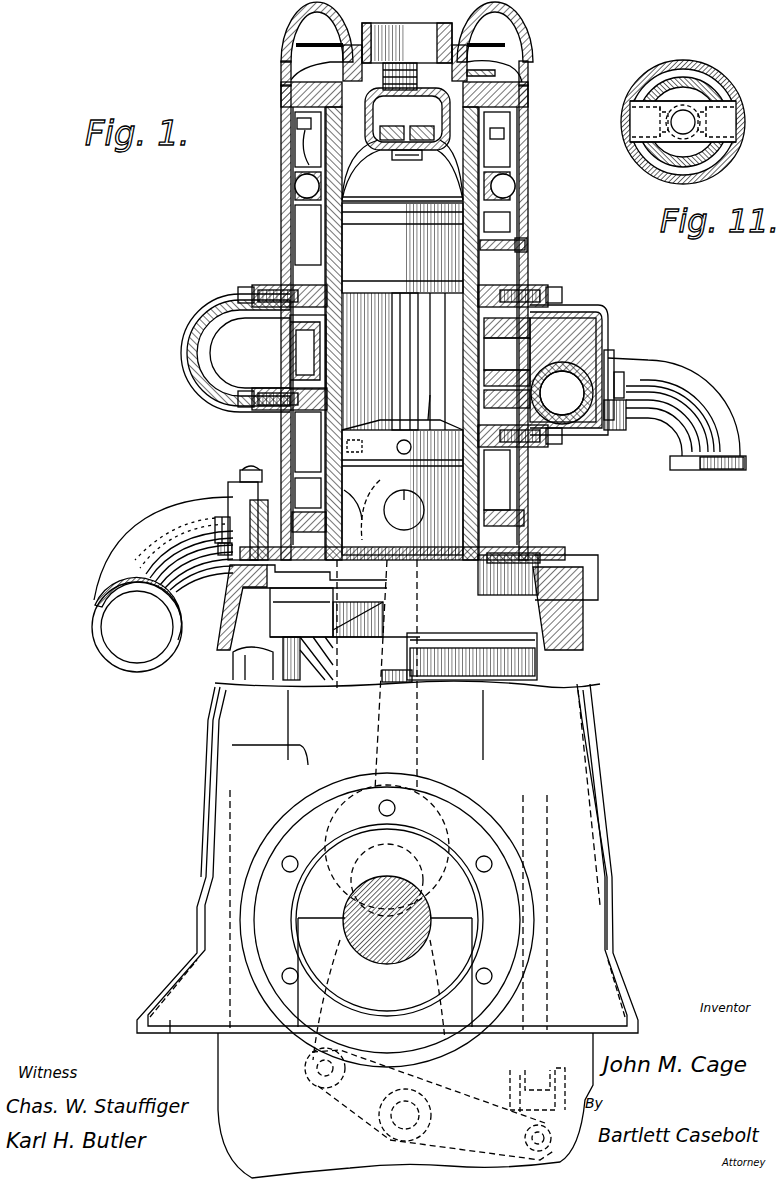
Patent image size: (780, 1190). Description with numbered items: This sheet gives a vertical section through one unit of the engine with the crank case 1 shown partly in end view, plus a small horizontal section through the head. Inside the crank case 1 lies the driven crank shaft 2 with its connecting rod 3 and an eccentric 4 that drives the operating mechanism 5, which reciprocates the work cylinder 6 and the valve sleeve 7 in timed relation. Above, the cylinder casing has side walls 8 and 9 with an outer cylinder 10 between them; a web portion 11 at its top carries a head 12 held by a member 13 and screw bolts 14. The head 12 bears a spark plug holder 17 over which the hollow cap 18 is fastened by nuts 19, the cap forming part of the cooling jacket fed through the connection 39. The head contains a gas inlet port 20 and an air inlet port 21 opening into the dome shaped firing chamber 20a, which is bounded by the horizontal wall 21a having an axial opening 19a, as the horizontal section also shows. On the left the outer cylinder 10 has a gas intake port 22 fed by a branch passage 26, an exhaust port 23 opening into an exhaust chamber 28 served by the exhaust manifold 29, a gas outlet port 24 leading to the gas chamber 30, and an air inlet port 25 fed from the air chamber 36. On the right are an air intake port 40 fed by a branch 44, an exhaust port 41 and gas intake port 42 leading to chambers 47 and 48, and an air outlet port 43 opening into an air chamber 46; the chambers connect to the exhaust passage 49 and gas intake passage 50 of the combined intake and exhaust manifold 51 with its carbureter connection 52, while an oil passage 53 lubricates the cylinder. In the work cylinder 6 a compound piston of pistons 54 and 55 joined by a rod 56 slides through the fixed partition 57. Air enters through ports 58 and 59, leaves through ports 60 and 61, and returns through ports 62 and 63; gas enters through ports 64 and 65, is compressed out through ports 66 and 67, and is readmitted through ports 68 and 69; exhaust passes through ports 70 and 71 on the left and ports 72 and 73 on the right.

In FIG. 1, the crank case 1 is at (590, 897).
In FIG. 1, the driven crank shaft 2 is at (412, 947).
In FIG. 1, the connecting rod 3 is at (418, 678).
In FIG. 1, the eccentric 4 is at (320, 910).
In FIG. 1, the operating mechanism 5 is at (500, 1075).
In FIG. 1, the work cylinder 6 is at (468, 304).
In FIG. 1, the valve sleeve 7 is at (466, 598).
In FIG. 1, the side wall 8 is at (282, 150).
In FIG. 1, the side wall 9 is at (528, 150).
In FIG. 1, the outer cylinder 10 is at (318, 276).
In FIG. 1, the web portion 11 is at (520, 96).
In FIG. 1, the head 12 is at (444, 105).
In FIG. 1, the member 13 is at (497, 72).
In FIG. 1, the screw bolt 14 is at (470, 68).
In FIG. 1, the spark plug holder 17 is at (412, 35).
In FIG. 1, the hollow cap 18 is at (490, 6).
In FIG. 1, the nut 19 is at (358, 40).
In FIG. 11, the axial opening 19a is at (680, 128).
In FIG. 1, the gas inlet port 20 is at (392, 132).
In FIG. 1, the dome shaped firing chamber 20a is at (480, 98).
In FIG. 1, the air inlet port 21 is at (422, 132).
In FIG. 1, the horizontal wall 21a is at (403, 172).
In FIG. 11, the horizontal wall 21a is at (683, 100).
In FIG. 1, the gas intake port 22 is at (292, 200).
In FIG. 1, the exhaust port 23 is at (318, 364).
In FIG. 1, the gas outlet port 24 is at (300, 447).
In FIG. 1, the air inlet port 25 is at (270, 512).
In FIG. 1, the branch passage 26 is at (304, 187).
In FIG. 1, the exhaust chamber 28 is at (305, 351).
In FIG. 1, the exhaust manifold 29 is at (182, 355).
In FIG. 1, the gas chamber 30 is at (308, 442).
In FIG. 1, the air chamber 36 is at (309, 505).
In FIG. 1, the connection 39 is at (145, 542).
In FIG. 1, the air intake port 40 is at (512, 206).
In FIG. 1, the exhaust port 41 is at (572, 340).
In FIG. 1, the gas intake port 42 is at (545, 420).
In FIG. 1, the air outlet port 43 is at (500, 490).
In FIG. 1, the branch 44 is at (505, 189).
In FIG. 1, the air chamber 46 is at (504, 488).
In FIG. 1, the chamber 47 is at (515, 354).
In FIG. 1, the chamber 48 is at (548, 440).
In FIG. 1, the exhaust passage 49 is at (562, 385).
In FIG. 1, the gas intake passage 50 is at (562, 393).
In FIG. 1, the combined intake and exhaust manifold 51 is at (612, 346).
In FIG. 1, the central connection 52 is at (705, 395).
In FIG. 1, the oil passage 53 is at (525, 244).
In FIG. 1, the piston 54 is at (402, 248).
In FIG. 1, the piston 55 is at (470, 470).
In FIG. 1, the rod 56 is at (412, 360).
In FIG. 1, the partition 57 is at (412, 380).
In FIG. 1, the port 58 is at (359, 513).
In FIG. 1, the port 59 is at (338, 490).
In FIG. 1, the port 60 is at (470, 486).
In FIG. 1, the port 61 is at (506, 518).
In FIG. 1, the port 62 is at (494, 160).
In FIG. 1, the port 63 is at (502, 140).
In FIG. 1, the port 64 is at (548, 450).
In FIG. 1, the port 65 is at (480, 390).
In FIG. 1, the port 66 is at (322, 425).
In FIG. 1, the port 67 is at (265, 420).
In FIG. 1, the port 68 is at (283, 104).
In FIG. 1, the port 69 is at (296, 124).
In FIG. 1, the exhaust port 70 is at (262, 290).
In FIG. 1, the exhaust port 71 is at (285, 343).
In FIG. 1, the port 72 is at (575, 312).
In FIG. 1, the port 73 is at (540, 300).